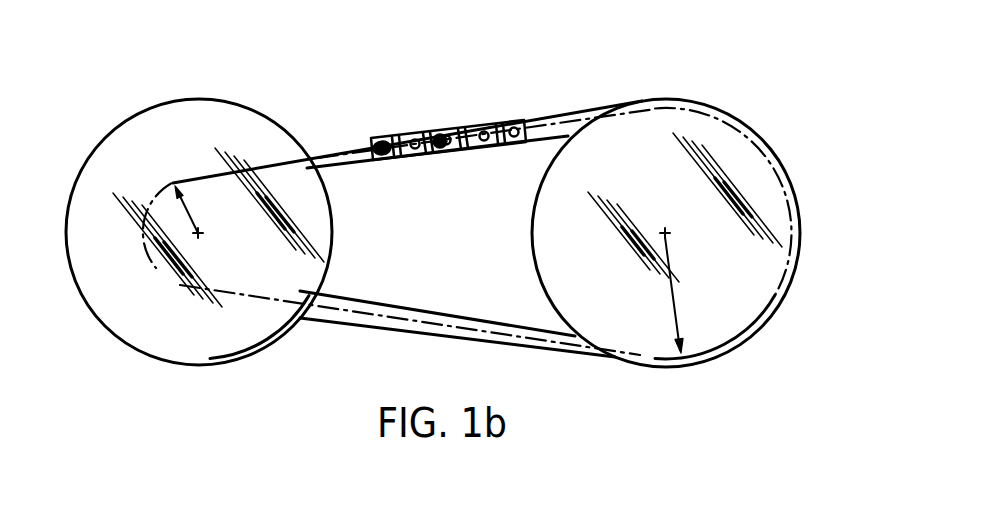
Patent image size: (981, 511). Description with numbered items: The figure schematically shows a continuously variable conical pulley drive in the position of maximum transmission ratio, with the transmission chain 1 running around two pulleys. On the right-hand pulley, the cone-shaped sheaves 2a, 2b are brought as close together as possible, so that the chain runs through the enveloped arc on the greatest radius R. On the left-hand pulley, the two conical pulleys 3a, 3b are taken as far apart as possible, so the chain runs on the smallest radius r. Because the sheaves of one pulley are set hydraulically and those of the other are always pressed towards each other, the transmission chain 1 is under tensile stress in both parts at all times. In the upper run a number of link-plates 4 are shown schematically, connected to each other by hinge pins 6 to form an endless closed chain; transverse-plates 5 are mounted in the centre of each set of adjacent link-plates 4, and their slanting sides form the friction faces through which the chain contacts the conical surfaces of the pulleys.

The transmission chain 1 is at (442, 176).
The cone-shaped sheave 2a is at (666, 264).
The cone-shaped sheave 2b is at (666, 264).
The conical pulley 3a is at (184, 227).
The conical pulley 3b is at (98, 148).
The link-plate 4 is at (388, 163).
The transverse-plate 5 is at (457, 157).
The hinge pin 6 is at (409, 163).